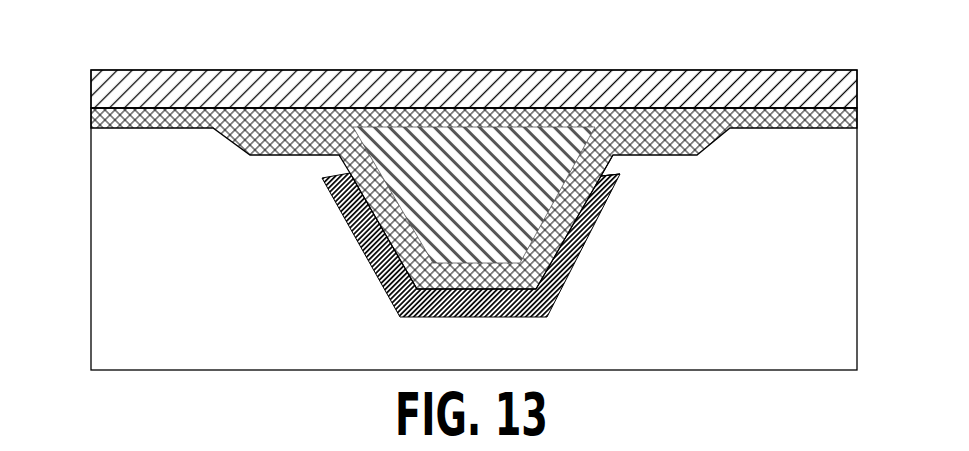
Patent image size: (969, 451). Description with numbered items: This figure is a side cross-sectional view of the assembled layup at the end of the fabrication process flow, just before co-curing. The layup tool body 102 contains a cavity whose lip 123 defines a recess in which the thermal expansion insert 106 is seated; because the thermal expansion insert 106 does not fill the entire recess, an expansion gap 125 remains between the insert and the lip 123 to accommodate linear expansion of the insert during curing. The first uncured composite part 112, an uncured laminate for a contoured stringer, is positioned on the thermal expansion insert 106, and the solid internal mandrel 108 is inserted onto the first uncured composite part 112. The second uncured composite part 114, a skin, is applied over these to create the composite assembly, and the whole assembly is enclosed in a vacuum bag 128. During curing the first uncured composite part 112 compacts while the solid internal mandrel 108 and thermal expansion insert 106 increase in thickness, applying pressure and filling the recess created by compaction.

The layup tool body 102 is at (90, 241).
The thermal expansion insert 106 is at (575, 264).
The solid internal mandrel 108 is at (466, 121).
The first uncured composite part 112 is at (298, 124).
The second uncured composite part 114 is at (198, 105).
The lip 123 is at (625, 154).
The expansion gap 125 is at (624, 176).
The vacuum bag 128 is at (112, 67).